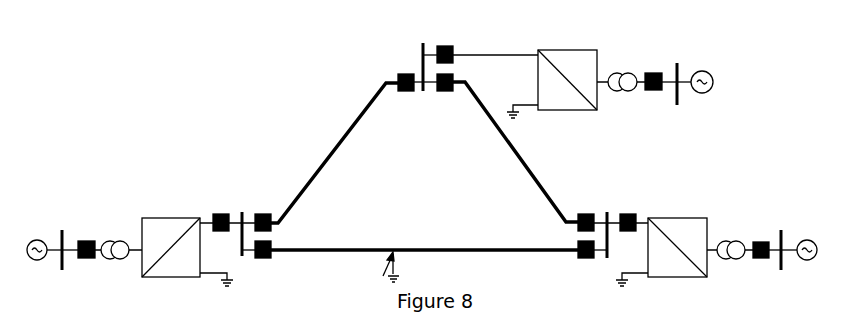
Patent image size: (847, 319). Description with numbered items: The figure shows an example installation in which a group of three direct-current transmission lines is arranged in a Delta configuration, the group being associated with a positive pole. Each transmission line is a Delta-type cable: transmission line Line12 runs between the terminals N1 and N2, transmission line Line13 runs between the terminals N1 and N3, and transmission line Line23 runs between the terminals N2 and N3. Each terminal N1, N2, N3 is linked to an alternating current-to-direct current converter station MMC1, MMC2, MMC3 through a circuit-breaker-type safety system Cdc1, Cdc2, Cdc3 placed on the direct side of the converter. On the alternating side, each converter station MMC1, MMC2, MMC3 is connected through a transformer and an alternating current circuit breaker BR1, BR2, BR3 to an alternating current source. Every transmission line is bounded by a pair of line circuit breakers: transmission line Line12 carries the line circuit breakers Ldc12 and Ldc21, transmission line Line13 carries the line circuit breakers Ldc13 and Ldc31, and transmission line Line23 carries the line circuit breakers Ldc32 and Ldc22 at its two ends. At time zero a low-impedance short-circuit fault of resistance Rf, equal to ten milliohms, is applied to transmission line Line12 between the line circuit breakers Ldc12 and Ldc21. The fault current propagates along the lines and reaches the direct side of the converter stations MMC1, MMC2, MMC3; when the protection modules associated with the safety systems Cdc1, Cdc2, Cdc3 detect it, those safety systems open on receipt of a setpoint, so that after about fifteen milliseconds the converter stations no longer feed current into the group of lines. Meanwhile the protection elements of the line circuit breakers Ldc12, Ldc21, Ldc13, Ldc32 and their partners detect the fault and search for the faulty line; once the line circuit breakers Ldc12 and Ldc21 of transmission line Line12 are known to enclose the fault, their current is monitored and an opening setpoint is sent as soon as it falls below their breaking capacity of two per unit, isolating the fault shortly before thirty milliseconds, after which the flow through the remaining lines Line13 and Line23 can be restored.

The AC circuit breaker 1 BR1 is at (86, 242).
The AC circuit breaker 2 BR2 is at (761, 243).
The AC circuit breaker 3 BR3 is at (653, 74).
The alternating current-to-direct current converter station MMC1 is at (171, 241).
The alternating current-to-direct current converter station MMC2 is at (677, 241).
The alternating current-to-direct current converter station MMC3 is at (567, 73).
The circuit-breaker-type safety system Cdc1 is at (216, 215).
The circuit-breaker-type safety system Cdc2 is at (632, 215).
The circuit-breaker-type safety system Cdc3 is at (453, 46).
The terminal N1 is at (242, 224).
The terminal N2 is at (607, 225).
The terminal N3 is at (423, 60).
The line circuit breaker Ldc12 is at (264, 257).
The line circuit breaker Ldc13 is at (268, 215).
The line circuit breaker Ldc21 is at (584, 215).
The DC line inductor 22 Ldc22 is at (586, 257).
The line circuit breaker Ldc31 is at (407, 91).
The line circuit breaker Ldc32 is at (447, 91).
The transmission line Line12 is at (424, 238).
The transmission line Line13 is at (334, 153).
The transmission line Line23 is at (515, 152).
The fault resistance Rf is at (403, 268).